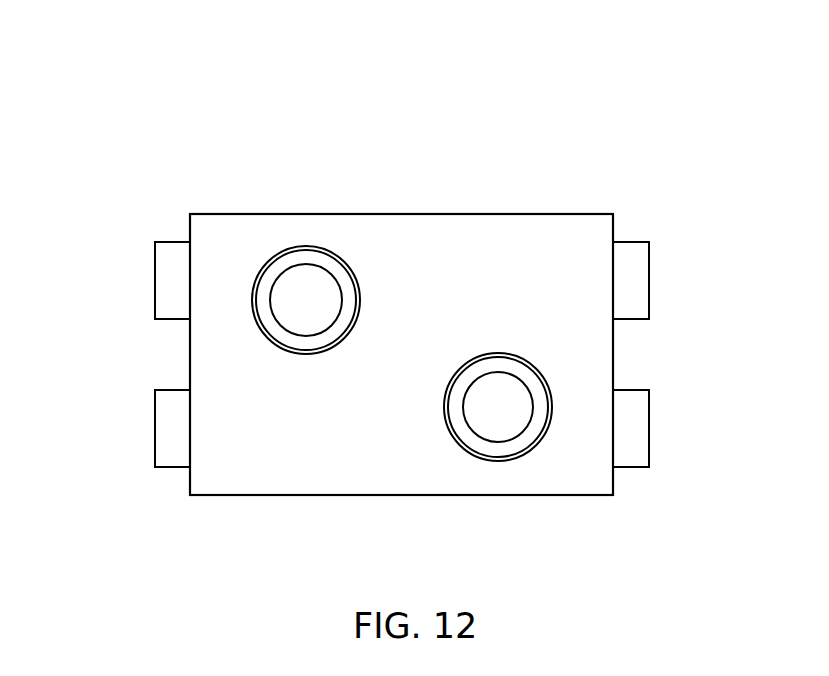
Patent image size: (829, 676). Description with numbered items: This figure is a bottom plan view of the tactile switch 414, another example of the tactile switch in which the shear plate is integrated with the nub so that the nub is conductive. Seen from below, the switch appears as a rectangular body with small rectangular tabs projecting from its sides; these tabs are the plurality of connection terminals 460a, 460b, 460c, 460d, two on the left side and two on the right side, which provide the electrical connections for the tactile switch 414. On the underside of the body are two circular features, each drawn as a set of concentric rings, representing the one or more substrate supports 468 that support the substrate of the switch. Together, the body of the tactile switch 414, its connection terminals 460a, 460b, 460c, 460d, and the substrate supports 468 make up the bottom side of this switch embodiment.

The tactile switch 414 is at (548, 152).
The connection terminal 460a is at (650, 283).
The connection terminal 460b is at (633, 430).
The connection terminal 460c is at (172, 437).
The connection terminal 460d is at (168, 258).
The substrate support 468 is at (505, 427).